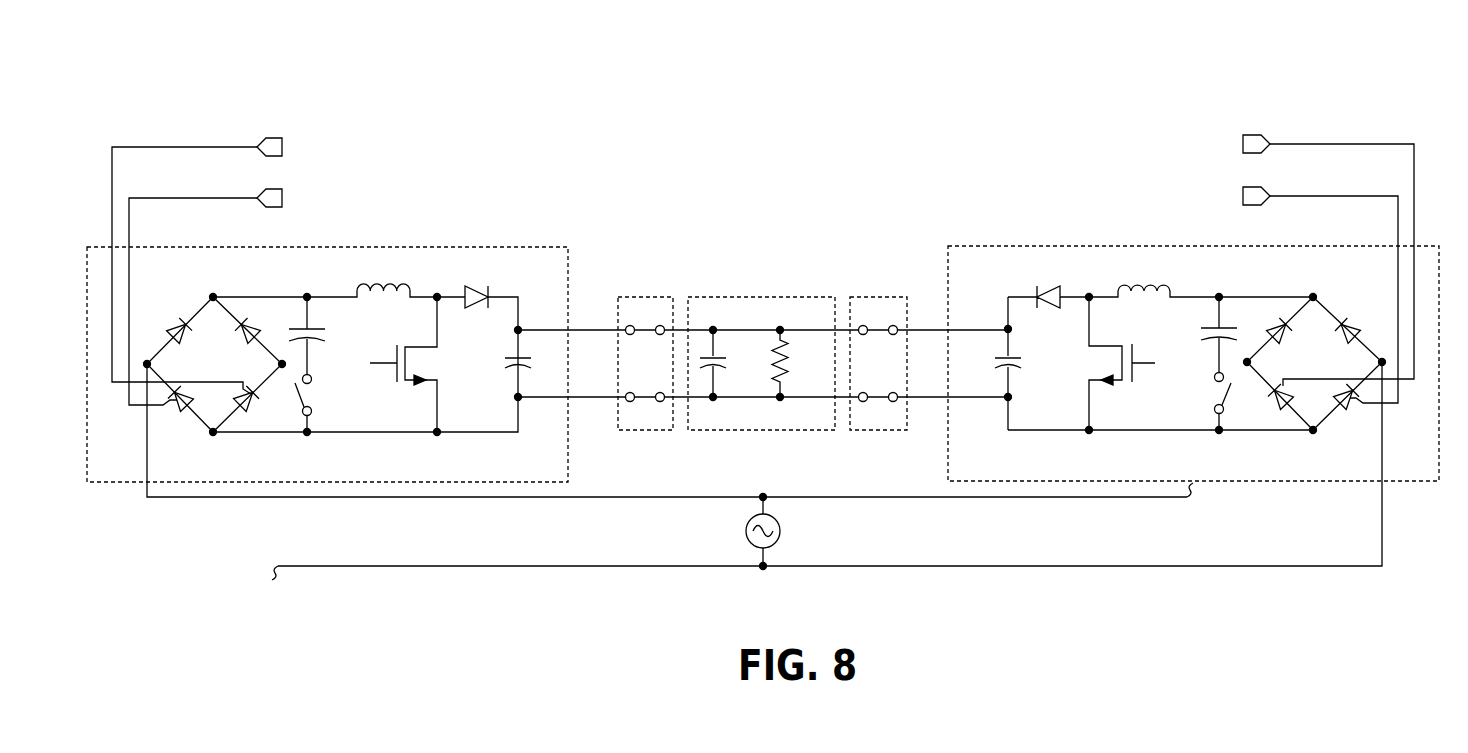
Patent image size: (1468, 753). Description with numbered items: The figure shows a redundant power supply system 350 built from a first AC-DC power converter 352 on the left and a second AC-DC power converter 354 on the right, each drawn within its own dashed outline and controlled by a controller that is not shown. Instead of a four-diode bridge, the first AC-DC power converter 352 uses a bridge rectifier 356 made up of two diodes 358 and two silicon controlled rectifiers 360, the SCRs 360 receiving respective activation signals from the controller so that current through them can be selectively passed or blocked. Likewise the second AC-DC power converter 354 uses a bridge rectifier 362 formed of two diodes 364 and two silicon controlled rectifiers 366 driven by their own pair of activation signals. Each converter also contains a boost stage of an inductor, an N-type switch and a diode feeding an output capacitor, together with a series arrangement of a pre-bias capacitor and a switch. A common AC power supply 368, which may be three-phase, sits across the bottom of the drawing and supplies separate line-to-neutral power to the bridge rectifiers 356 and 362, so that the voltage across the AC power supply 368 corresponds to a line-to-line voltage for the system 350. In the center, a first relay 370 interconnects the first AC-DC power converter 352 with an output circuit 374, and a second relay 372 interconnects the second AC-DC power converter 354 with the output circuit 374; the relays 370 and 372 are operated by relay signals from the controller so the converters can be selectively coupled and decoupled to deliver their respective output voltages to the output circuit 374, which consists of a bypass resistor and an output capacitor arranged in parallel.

The redundant power supply system 350 is at (228, 78).
The first AC-DC power converter 352 is at (450, 247).
The second AC-DC power converter 354 is at (1095, 246).
The bridge rectifier 356 is at (201, 290).
The diodes 358 is at (196, 349).
The silicon controlled rectifiers 360 is at (207, 446).
The bridge rectifier 362 is at (1322, 290).
The diodes 364 is at (1300, 348).
The silicon controlled rectifiers 366 is at (1307, 446).
The common AC power supply 368 is at (783, 525).
The first relay 370 is at (648, 430).
The second relay 372 is at (868, 430).
The output circuit 374 is at (773, 297).